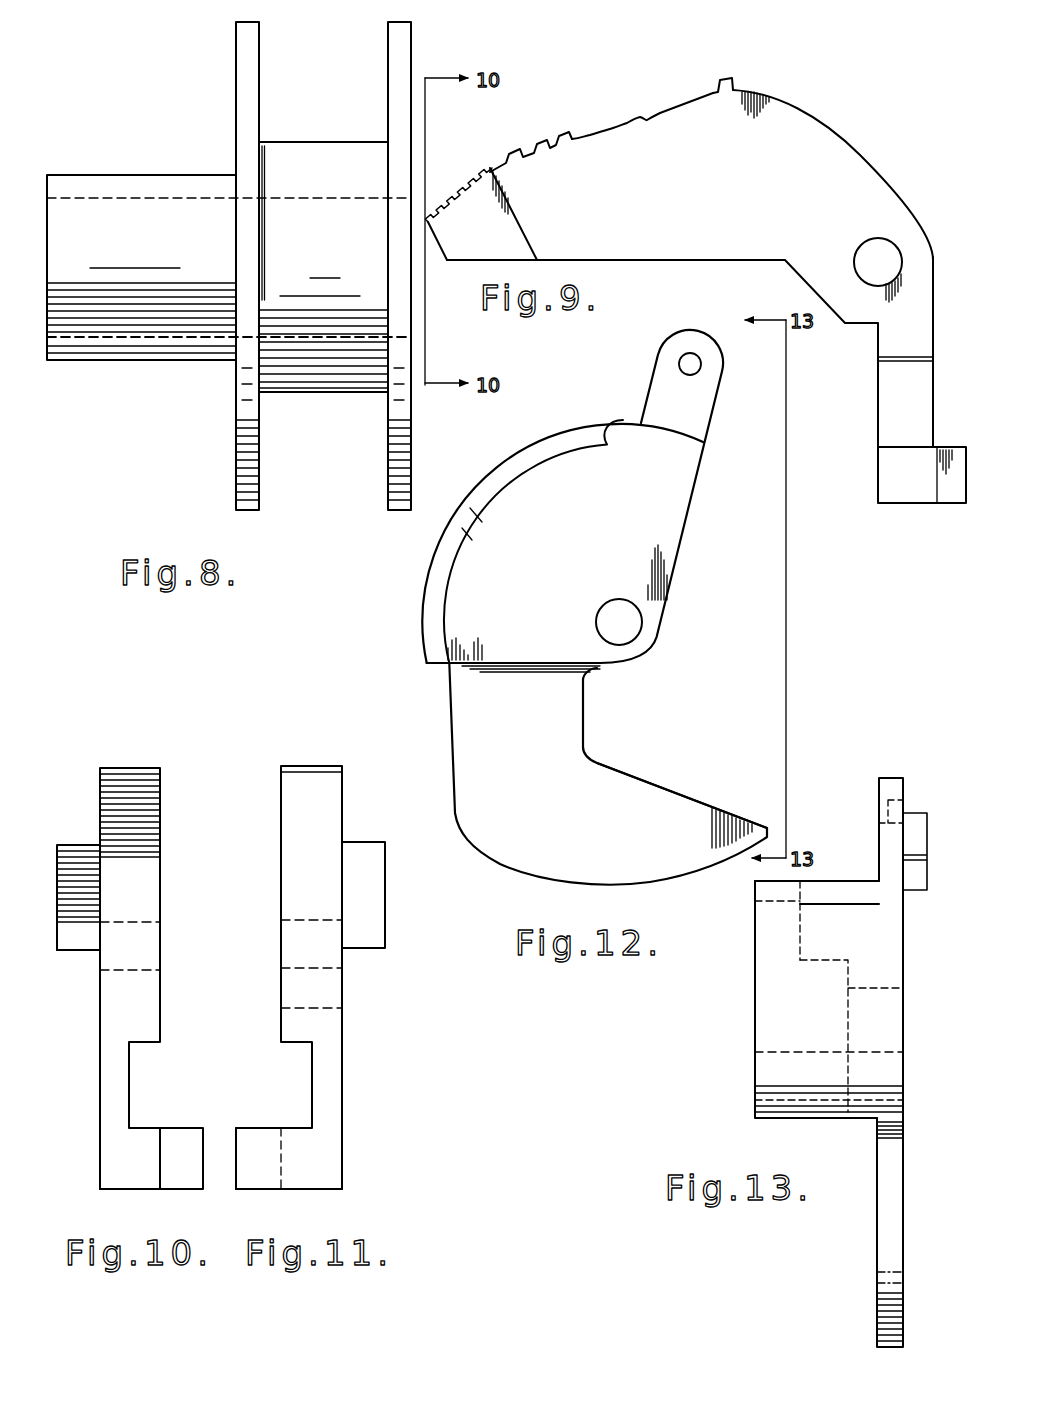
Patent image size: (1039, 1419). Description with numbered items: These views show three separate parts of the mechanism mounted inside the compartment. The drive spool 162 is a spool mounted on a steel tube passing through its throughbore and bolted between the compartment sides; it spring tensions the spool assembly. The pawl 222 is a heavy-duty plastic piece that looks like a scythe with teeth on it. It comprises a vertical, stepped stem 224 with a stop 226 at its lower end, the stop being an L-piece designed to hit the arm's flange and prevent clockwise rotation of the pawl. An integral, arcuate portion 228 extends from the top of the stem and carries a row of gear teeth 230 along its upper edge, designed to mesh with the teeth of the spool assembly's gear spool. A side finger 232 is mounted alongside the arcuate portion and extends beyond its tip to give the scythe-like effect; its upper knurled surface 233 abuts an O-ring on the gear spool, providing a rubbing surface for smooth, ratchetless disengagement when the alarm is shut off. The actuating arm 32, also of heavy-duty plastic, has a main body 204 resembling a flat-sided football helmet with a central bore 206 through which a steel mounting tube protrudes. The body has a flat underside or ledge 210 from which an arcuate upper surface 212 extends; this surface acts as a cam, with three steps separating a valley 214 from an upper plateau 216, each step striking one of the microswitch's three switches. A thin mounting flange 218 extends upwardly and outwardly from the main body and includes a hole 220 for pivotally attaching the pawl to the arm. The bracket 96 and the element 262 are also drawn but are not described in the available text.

In FIG. 12, the actuating arm 32 is at (622, 710).
In FIG. 13, the mounting plate 96 is at (877, 1324).
In FIG. 8, the drive spool 162 is at (262, 90).
In FIG. 12, the main body 204 is at (675, 545).
In FIG. 13, the main body 204 is at (770, 1008).
In FIG. 12, the central bore 206 is at (640, 636).
In FIG. 13, the central bore 206 is at (778, 1054).
In FIG. 12, the ledge 210 is at (522, 672).
In FIG. 13, the ledge 210 is at (818, 1120).
In FIG. 12, the arcuate upper surface 212 is at (428, 572).
In FIG. 13, the arcuate upper surface 212 is at (840, 880).
In FIG. 12, the valley 214 is at (512, 488).
In FIG. 13, the valley 214 is at (782, 905).
In FIG. 12, the upper plateau 216 is at (530, 445).
In FIG. 13, the upper plateau 216 is at (810, 968).
In FIG. 12, the mounting flange 218 is at (720, 400).
In FIG. 13, the mounting flange 218 is at (887, 778).
In FIG. 12, the hole 220 is at (690, 360).
In FIG. 13, the hole 220 is at (880, 805).
In FIG. 9, the pawl 222 is at (790, 152).
In FIG. 10, the pawl 222 is at (178, 1002).
In FIG. 11, the pawl 222 is at (266, 864).
In FIG. 9, the stem 224 is at (893, 418).
In FIG. 10, the stem 224 is at (98, 1092).
In FIG. 11, the stem 224 is at (346, 1096).
In FIG. 9, the stop 226 is at (950, 500).
In FIG. 10, the stop 226 is at (178, 1142).
In FIG. 11, the stop 226 is at (257, 1142).
In FIG. 9, the arcuate portion 228 is at (650, 120).
In FIG. 11, the arcuate portion 228 is at (322, 802).
In FIG. 9, the gear teeth 230 is at (566, 134).
In FIG. 10, the gear teeth 230 is at (132, 782).
In FIG. 11, the gear teeth 230 is at (316, 766).
In FIG. 9, the side finger 232 is at (492, 246).
In FIG. 10, the side finger 232 is at (72, 936).
In FIG. 11, the side finger 232 is at (374, 920).
In FIG. 9, the knurled surface 233 is at (458, 188).
In FIG. 10, the knurled surface 233 is at (76, 848).
In FIG. 8, the shaft 262 is at (160, 200).